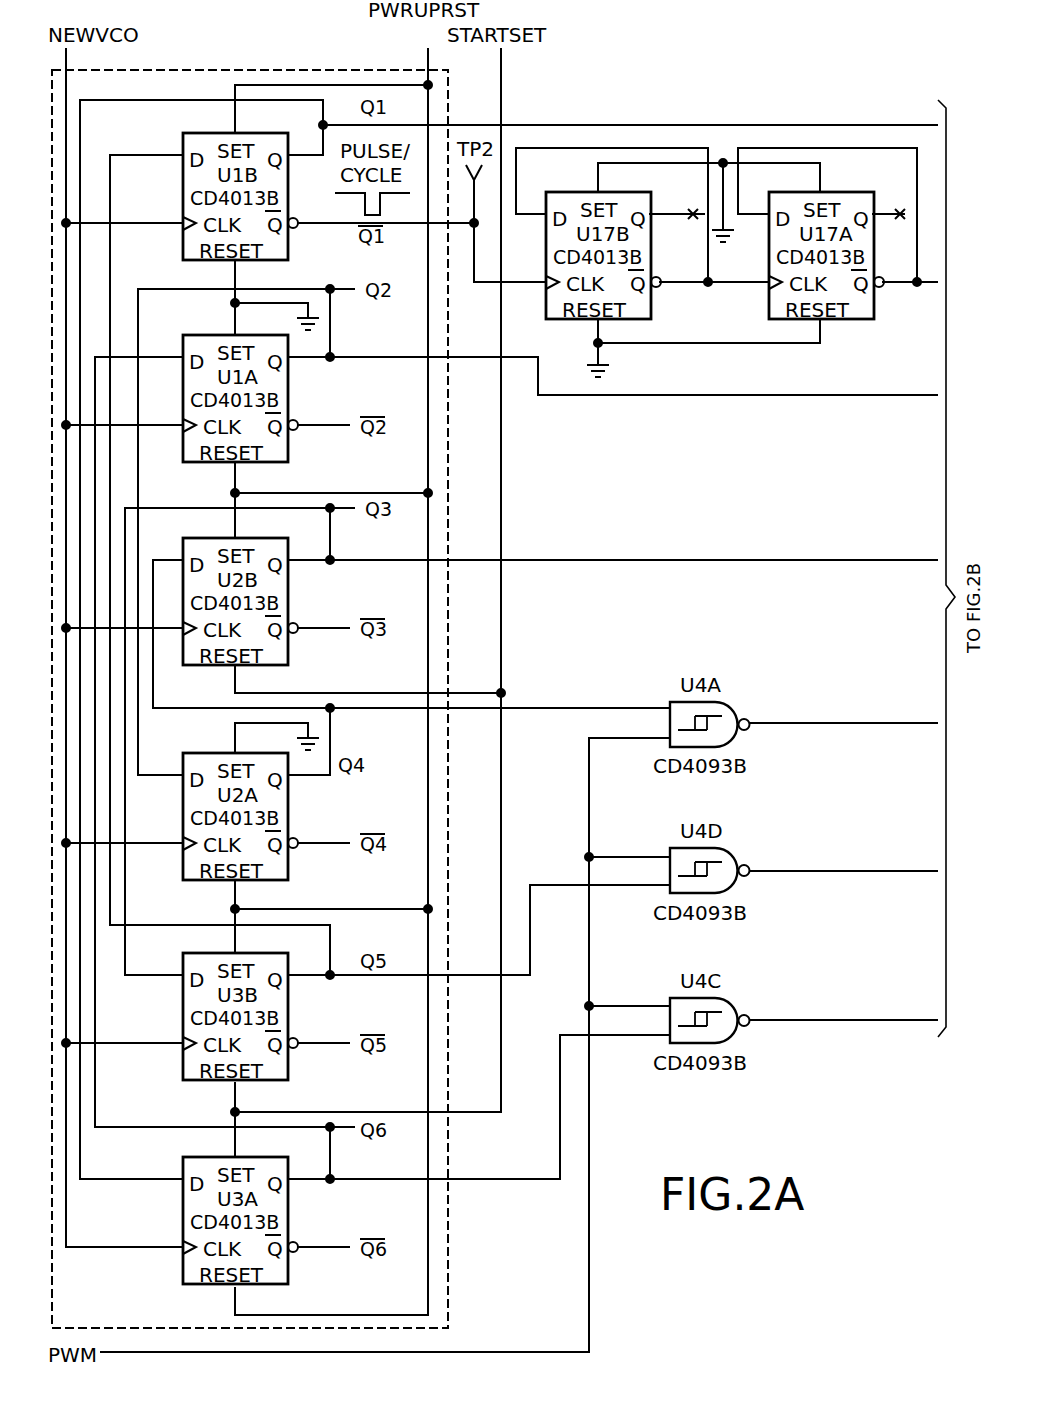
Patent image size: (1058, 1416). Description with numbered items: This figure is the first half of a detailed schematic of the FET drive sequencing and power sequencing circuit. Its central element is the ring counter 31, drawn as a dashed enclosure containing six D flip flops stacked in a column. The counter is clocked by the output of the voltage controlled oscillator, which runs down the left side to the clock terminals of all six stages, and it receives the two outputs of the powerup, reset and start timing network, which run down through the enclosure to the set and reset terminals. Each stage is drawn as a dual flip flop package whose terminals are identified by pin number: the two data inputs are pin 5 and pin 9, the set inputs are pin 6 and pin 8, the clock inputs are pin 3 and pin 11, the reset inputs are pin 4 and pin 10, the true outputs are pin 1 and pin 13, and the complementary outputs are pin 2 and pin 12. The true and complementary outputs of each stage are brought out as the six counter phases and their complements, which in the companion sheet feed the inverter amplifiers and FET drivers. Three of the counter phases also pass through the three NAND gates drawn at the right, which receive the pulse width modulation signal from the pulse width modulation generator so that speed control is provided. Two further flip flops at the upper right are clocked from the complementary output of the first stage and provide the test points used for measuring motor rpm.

The ring counter 31 is at (234, 70).
The flip-flop pin 1 (Q output) 1 is at (596, 685).
The flip-flop pin 2 (Q-bar output) 2 is at (607, 753).
The flip-flop pin 3 (clock input) 3 is at (486, 753).
The flip-flop pin 4 (reset input) 4 is at (536, 817).
The flip-flop pin 5 (data input) 5 is at (461, 685).
The flip-flop pin 6 (set input) 6 is at (536, 660).
The flip-flop pin 8 (set input) 8 is at (452, 555).
The flip-flop pin 9 (data input) 9 is at (411, 583).
The flip-flop pin 10 (reset input) 10 is at (527, 686).
The flip-flop pin 11 (clock input) 11 is at (486, 621).
The flip-flop pin 12 (Q-bar output) 12 is at (497, 621).
The flip-flop pin 13 (Q output) 13 is at (486, 553).